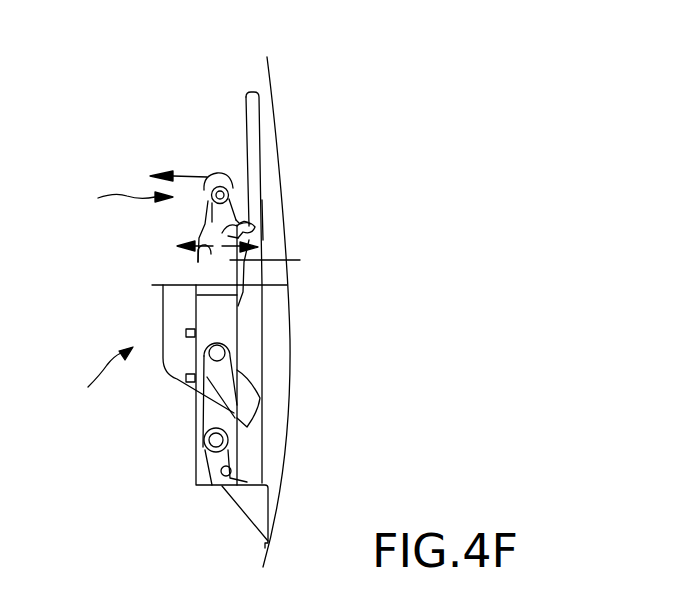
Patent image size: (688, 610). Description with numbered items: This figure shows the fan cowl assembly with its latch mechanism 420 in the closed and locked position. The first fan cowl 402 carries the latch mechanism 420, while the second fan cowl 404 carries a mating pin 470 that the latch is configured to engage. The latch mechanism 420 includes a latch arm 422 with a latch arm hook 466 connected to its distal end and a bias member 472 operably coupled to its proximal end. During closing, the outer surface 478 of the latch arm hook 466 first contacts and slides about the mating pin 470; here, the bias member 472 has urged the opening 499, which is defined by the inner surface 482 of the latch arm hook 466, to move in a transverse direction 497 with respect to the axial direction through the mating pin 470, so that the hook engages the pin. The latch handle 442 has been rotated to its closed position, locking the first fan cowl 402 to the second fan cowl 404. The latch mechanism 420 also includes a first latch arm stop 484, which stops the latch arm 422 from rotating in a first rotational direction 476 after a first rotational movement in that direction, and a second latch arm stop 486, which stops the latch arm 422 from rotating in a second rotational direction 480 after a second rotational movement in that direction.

The first fan cowl 402 is at (285, 363).
The second fan cowl 404 is at (275, 120).
The latch mechanism 420 is at (90, 379).
The latch arm 422 is at (300, 260).
The latch handle 442 is at (253, 100).
The latch arm hook 466 is at (242, 177).
The mating pin 470 is at (213, 199).
The bias member 472 is at (195, 463).
The first rotational direction 476 is at (256, 230).
The outer surface 478 is at (221, 177).
The second rotational direction 480 is at (198, 262).
The inner surface 482 is at (214, 173).
The first latch arm stop 484 is at (185, 379).
The second latch arm stop 486 is at (187, 332).
The transverse direction 497 is at (200, 176).
The opening 499 is at (116, 201).